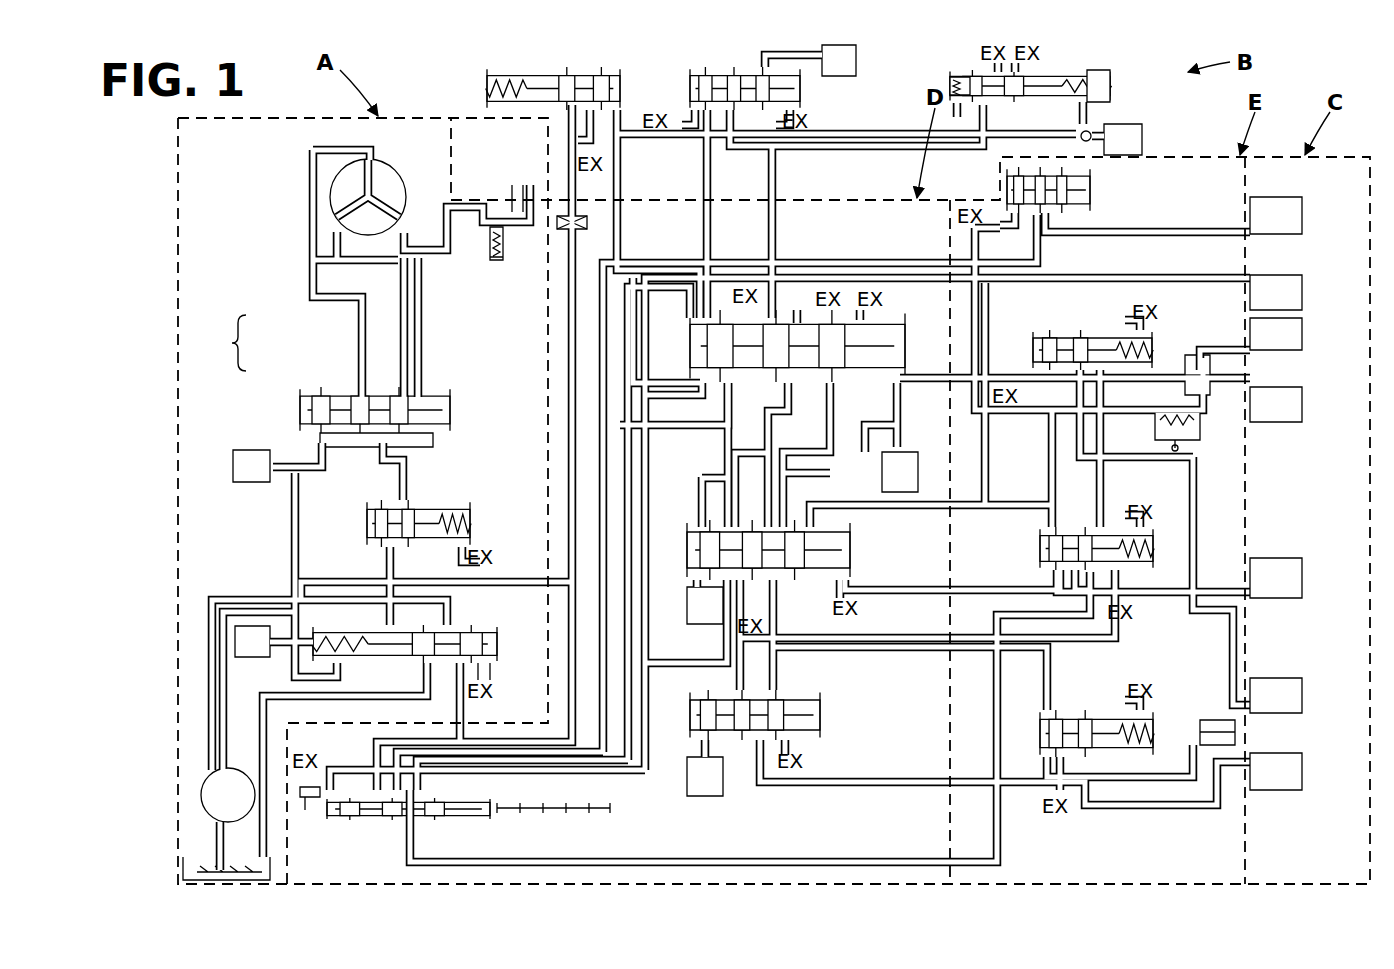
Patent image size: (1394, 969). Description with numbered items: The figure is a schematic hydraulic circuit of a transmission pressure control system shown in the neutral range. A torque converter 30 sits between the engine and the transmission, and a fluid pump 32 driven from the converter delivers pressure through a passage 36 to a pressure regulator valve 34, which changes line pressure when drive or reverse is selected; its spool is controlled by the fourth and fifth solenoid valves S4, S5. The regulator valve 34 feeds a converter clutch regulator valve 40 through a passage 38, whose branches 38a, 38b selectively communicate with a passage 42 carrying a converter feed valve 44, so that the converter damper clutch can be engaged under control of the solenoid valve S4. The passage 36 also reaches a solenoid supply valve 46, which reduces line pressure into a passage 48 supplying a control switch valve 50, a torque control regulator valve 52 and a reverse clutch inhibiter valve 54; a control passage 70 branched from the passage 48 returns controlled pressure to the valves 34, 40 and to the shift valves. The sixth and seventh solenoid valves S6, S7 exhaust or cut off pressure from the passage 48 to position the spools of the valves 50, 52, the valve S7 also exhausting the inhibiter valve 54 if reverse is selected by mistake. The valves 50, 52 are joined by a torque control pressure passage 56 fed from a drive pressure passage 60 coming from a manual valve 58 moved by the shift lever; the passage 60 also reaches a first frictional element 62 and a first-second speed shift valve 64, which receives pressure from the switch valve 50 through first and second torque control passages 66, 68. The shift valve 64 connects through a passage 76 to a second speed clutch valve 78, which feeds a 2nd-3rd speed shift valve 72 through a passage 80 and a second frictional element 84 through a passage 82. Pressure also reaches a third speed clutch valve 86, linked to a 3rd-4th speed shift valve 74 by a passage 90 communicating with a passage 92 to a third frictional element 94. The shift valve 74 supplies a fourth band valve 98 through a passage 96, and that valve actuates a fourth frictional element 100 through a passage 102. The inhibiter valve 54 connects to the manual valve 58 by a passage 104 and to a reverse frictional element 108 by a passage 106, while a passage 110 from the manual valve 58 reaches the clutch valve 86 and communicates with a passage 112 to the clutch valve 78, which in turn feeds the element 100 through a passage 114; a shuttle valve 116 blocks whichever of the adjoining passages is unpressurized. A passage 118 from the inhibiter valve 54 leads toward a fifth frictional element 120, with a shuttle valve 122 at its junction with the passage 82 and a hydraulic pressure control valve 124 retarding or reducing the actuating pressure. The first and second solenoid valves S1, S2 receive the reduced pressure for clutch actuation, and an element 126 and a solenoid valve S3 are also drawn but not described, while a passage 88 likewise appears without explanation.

The torque converter 30 is at (425, 172).
The fluid pump 32 is at (195, 770).
The pressure regulator valve 34 is at (497, 665).
The passage 36 is at (553, 322).
The passage 38 is at (223, 343).
The passage 38a is at (400, 320).
The passage 38b is at (360, 350).
The converter clutch regulator valve 40 is at (455, 410).
The passage 42 is at (395, 575).
The converter feed valve 44 is at (475, 520).
The solenoid supply valve 46 is at (630, 85).
The passage 48 is at (640, 140).
The control switch valve 50 is at (810, 95).
The torque control regulator valve 52 is at (1110, 80).
The reverse clutch inhibiter valve 54 is at (1095, 195).
The torque control hydraulic pressure passage 56 is at (797, 157).
The manual valve 58 is at (375, 822).
The drive hydraulic pressure passage 60 is at (620, 757).
The first frictional element 62 is at (1302, 295).
The first-second speed shift valve 64 is at (895, 320).
The first torque control hydraulic pressure passage 66 is at (710, 247).
The second torque control hydraulic pressure passage 68 is at (775, 247).
The control passage 70 is at (497, 580).
The 2nd-3rd speed shift valve 72 is at (855, 551).
The 3rd-4th speed shift valve 74 is at (825, 720).
The passage 76 is at (913, 377).
The second speed clutch valve 78 is at (1160, 340).
The passage 80 is at (985, 500).
The passage 82 is at (1185, 360).
The second frictional element 84 is at (1302, 400).
The third speed clutch valve 86 is at (1035, 548).
The passage 88 is at (897, 590).
The passage 90 is at (883, 647).
The passage 92 is at (1210, 587).
The third frictional element 94 is at (1302, 570).
The passage 96 is at (880, 782).
The fourth band valve 98 is at (1150, 705).
The fourth frictional element 100 is at (1302, 690).
The passage 102 is at (1123, 777).
The passage 104 is at (890, 260).
The passage 106 is at (1200, 232).
The reverse frictional element 108 is at (1302, 215).
The passage 110 is at (743, 863).
The passage 112 is at (1078, 497).
The passage 114 is at (1195, 478).
The shuttle valve 116 is at (1235, 732).
The passage 118 is at (990, 307).
The fifth frictional element 120 is at (1302, 333).
The shuttle valve 122 is at (1213, 367).
The hydraulic pressure control valve 124 is at (1200, 432).
The brake 126 is at (1302, 768).
The first solenoid valve S1 is at (705, 605).
The second solenoid valve S2 is at (705, 776).
The solenoid valve S3 is at (900, 472).
The fourth solenoid valve S4 is at (251, 466).
The fifth solenoid valve S5 is at (252, 641).
The sixth solenoid valve S6 is at (810, 60).
The seventh solenoid valve S7 is at (1111, 139).